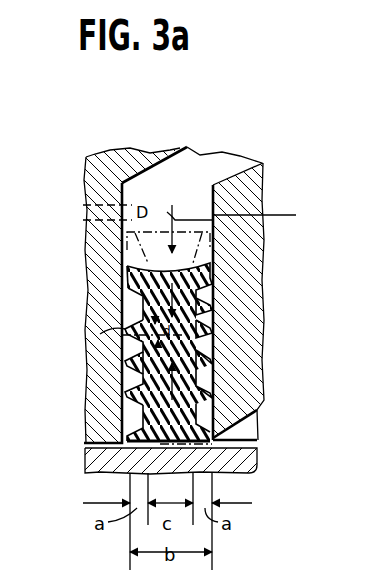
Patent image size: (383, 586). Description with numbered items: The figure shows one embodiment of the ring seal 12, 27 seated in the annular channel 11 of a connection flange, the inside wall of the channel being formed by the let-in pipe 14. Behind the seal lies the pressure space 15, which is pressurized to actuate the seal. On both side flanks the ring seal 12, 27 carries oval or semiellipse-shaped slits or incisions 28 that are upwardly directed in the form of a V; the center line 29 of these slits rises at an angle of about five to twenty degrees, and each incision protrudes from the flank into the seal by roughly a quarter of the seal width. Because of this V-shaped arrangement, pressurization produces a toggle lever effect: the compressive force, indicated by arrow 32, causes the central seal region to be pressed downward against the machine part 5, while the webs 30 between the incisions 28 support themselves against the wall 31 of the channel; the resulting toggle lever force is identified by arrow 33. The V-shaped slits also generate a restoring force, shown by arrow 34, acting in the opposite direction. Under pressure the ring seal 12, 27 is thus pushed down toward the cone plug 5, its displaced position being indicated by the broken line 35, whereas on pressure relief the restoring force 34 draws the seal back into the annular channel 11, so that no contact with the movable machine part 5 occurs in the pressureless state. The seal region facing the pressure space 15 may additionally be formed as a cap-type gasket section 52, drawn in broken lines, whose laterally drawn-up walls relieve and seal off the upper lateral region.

The machine part 5 is at (258, 463).
The annular channel 11 is at (236, 185).
The ring seal 12 is at (133, 417).
The pipe 14 is at (229, 272).
The pressure space 15 is at (195, 156).
The ring seal 27 is at (131, 426).
The incisions 28 is at (130, 348).
The center line 29 is at (127, 333).
The webs 30 is at (212, 310).
The wall 31 is at (210, 288).
The compressive force arrow 32 is at (243, 216).
The toggle lever force arrow 33 is at (130, 295).
The restoring force arrow 34 is at (128, 368).
The broken line 35 is at (245, 418).
The cap-type gasket section 52 is at (127, 262).